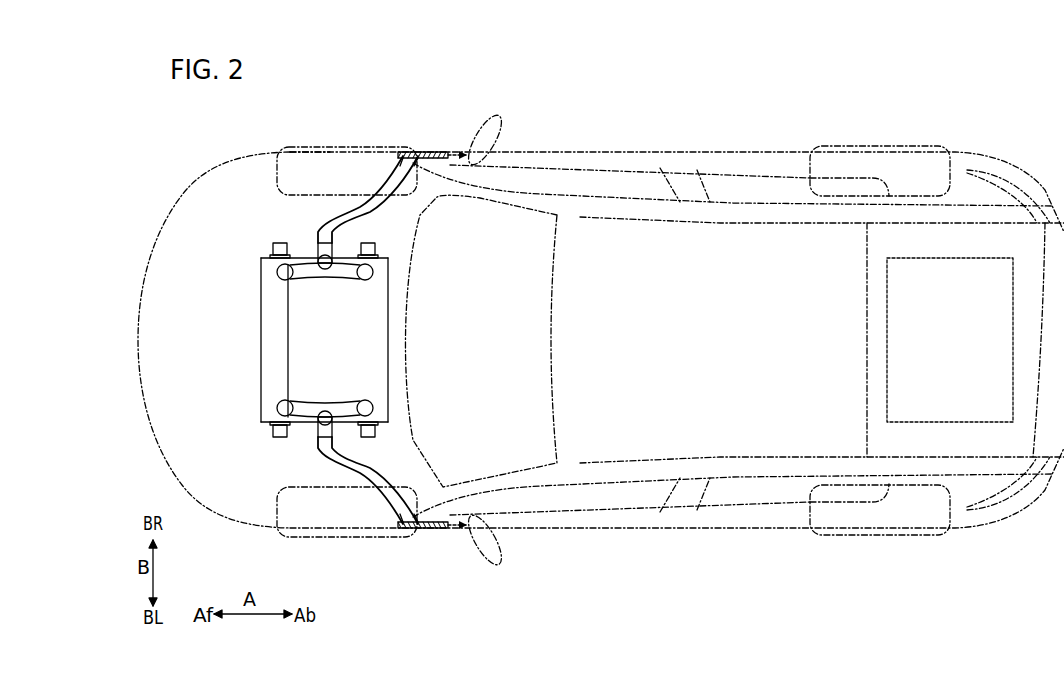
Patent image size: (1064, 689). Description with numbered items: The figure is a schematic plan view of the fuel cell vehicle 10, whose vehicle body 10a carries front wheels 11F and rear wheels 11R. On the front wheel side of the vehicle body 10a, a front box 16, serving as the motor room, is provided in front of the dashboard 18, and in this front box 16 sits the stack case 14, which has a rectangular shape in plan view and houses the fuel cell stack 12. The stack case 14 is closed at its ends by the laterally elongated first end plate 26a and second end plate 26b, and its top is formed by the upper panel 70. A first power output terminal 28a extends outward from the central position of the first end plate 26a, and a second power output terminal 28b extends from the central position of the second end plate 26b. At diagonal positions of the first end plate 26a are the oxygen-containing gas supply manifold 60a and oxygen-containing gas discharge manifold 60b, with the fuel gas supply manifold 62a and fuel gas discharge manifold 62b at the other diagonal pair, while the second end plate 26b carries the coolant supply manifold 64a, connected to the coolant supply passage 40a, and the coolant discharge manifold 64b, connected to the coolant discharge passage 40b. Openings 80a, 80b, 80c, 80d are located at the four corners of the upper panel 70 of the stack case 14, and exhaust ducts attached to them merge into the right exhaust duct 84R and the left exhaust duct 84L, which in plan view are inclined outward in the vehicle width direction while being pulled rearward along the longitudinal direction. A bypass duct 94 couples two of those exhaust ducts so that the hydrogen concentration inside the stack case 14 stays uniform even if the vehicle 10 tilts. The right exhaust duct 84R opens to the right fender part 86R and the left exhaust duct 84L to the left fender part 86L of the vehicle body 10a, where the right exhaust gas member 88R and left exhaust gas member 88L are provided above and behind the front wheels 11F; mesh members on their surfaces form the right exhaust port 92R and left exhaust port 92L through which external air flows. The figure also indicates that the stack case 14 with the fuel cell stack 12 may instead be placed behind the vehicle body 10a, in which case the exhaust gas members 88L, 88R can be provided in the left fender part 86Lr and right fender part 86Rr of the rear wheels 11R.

The fuel cell vehicle 10 is at (207, 111).
The vehicle body 10a is at (252, 150).
The front wheels 11F is at (306, 146).
The rear wheels 11R is at (840, 146).
The fuel cell stack 12 is at (637, 340).
The stack case 14 is at (637, 340).
The front box 16 is at (202, 190).
The dashboard 18 is at (403, 322).
The first end plate 26a is at (388, 420).
The second end plate 26b is at (388, 260).
The first power output terminal 28a is at (325, 400).
The second power output terminal 28b is at (325, 281).
The coolant supply passage 40a is at (372, 247).
The coolant discharge passage 40b is at (279, 242).
The oxygen-containing gas supply manifold 60a is at (432, 444).
The oxygen-containing gas discharge manifold 60b is at (279, 440).
The fuel gas supply manifold 62a is at (256, 448).
The fuel gas discharge manifold 62b is at (372, 437).
The coolant supply manifold 64a is at (432, 235).
The coolant discharge manifold 64b is at (256, 233).
The upper panel 70 is at (373, 352).
The opening 80a is at (277, 272).
The opening 80b is at (365, 399).
The opening 80c is at (277, 408).
The opening 80d is at (365, 281).
The left exhaust duct 84L is at (353, 470).
The right exhaust duct 84R is at (353, 205).
The left fender part 86L is at (396, 530).
The right fender part 86R is at (396, 151).
The left fender part 86Lr is at (972, 523).
The right fender part 86Rr is at (972, 160).
The left exhaust gas member 88L is at (437, 530).
The right exhaust gas member 88R is at (437, 151).
The left exhaust port 92L is at (418, 522).
The right exhaust port 92R is at (418, 158).
The bypass duct 94 is at (284, 336).